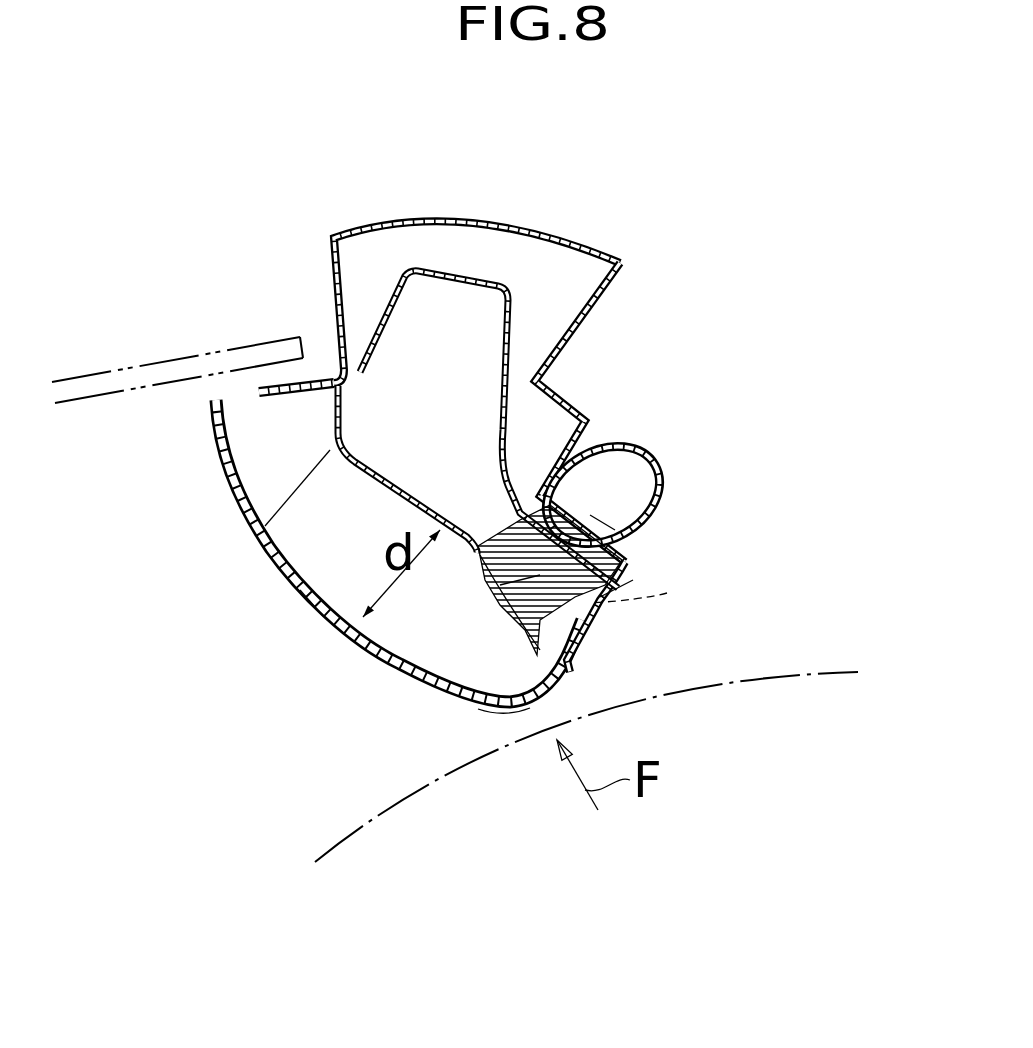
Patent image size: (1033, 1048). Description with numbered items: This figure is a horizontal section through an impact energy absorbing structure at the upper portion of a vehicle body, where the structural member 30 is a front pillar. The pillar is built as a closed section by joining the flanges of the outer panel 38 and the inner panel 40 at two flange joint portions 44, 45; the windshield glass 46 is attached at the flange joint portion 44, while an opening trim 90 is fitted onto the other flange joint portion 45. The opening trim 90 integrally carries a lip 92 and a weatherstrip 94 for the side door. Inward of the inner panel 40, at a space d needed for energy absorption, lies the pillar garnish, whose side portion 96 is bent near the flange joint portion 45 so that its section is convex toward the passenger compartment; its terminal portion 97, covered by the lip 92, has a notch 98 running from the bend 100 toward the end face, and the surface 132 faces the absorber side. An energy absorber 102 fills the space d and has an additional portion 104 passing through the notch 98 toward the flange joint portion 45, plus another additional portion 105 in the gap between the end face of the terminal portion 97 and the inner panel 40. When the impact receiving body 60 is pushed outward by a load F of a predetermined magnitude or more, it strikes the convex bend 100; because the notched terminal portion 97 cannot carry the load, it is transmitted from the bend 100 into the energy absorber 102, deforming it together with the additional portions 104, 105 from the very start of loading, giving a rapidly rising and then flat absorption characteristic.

The structural member 30 is at (515, 216).
The outer panel 38 is at (610, 254).
The flange joint portion 44 is at (277, 373).
The window glass 46 is at (97, 370).
The inner panel 40 is at (360, 477).
The energy absorber 102 is at (317, 539).
The outer surface of strip 132 is at (323, 620).
The terminal portion 97 is at (530, 585).
The additional portion 105 is at (507, 512).
The weatherstrip 94 is at (656, 490).
The additional portion 104 is at (603, 520).
The opening trim 90 is at (643, 557).
The flange joint portion 45 is at (600, 597).
The notch 98 is at (653, 593).
The lip 92 is at (537, 607).
The side portion 96 is at (567, 673).
The bend 100 is at (568, 662).
The impact receiving body 60 is at (353, 828).